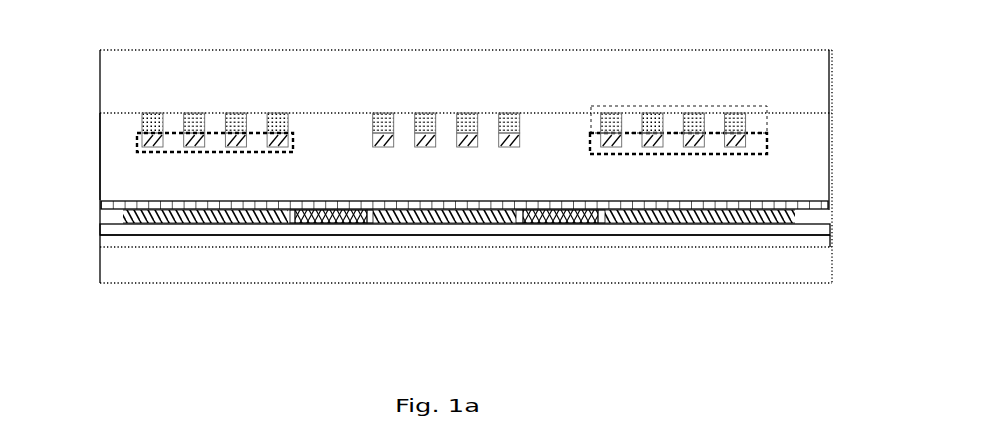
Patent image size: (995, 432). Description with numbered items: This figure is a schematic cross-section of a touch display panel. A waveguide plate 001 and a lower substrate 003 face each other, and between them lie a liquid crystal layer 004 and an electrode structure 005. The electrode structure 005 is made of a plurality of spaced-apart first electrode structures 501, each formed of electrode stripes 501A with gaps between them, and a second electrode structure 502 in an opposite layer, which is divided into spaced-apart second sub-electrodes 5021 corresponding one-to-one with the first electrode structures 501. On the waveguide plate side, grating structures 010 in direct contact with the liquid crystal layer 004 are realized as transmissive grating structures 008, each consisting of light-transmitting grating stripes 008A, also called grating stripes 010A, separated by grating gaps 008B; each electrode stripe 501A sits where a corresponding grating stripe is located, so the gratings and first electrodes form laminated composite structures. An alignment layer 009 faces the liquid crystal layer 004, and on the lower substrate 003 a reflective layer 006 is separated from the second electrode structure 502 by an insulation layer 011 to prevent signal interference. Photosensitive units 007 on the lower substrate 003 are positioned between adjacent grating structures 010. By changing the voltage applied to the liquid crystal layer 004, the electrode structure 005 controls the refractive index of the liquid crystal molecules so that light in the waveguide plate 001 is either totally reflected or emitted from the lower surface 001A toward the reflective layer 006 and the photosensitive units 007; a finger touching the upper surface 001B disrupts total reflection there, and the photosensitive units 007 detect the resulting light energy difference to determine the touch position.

The waveguide plate 001 is at (500, 66).
The lower surface of the waveguide plate 001A is at (549, 112).
The upper surface of the waveguide plate 001B is at (404, 50).
The lower substrate 003 is at (833, 262).
The liquid crystal layer 004 is at (107, 150).
The electrode structure 005 is at (449, 227).
The first electrode structure 501 is at (130, 156).
The electrode stripe 501A is at (693, 140).
The second electrode structure 502 is at (421, 265).
The second sub-electrode 5021 is at (211, 210).
The reflective layer 006 is at (815, 239).
The photosensitive unit 007 is at (548, 210).
The transmissive grating structure 008 is at (748, 107).
The grating structure 010 is at (748, 107).
The grating stripe 008A is at (792, 83).
The grating stripe 010A is at (735, 123).
The grating gap 008B is at (672, 123).
The alignment layer 009 is at (835, 206).
The insulation layer 011 is at (133, 229).